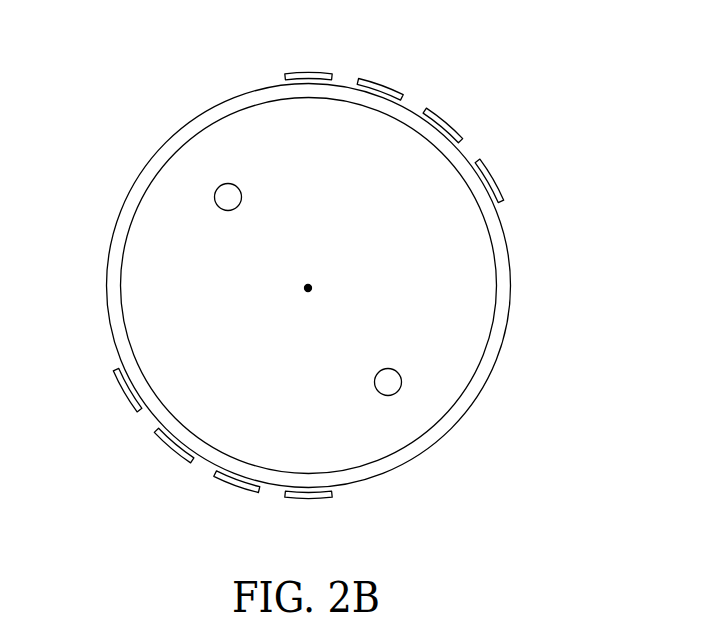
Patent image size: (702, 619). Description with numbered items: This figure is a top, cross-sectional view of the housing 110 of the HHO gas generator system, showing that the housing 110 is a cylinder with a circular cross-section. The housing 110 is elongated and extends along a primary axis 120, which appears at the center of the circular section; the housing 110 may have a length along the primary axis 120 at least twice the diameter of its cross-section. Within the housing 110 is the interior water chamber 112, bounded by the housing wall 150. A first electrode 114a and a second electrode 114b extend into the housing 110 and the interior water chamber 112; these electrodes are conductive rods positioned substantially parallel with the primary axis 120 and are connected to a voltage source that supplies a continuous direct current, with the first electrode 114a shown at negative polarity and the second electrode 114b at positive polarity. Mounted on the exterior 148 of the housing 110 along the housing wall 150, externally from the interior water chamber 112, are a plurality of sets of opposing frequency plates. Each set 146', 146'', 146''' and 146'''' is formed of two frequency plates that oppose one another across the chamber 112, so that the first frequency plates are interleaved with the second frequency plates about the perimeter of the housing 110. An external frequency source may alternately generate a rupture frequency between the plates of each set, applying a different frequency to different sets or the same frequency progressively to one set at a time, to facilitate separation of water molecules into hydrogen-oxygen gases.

The housing 110 is at (163, 118).
The interior water chamber 112 is at (488, 282).
The first electrode 114a is at (375, 383).
The second electrode 114b is at (242, 195).
The primary axis 120 is at (302, 290).
The exterior of housing 148 is at (236, 97).
The housing wall 150 is at (117, 219).
The first set of opposing frequency plates 146' is at (303, 288).
The second set of opposing frequency plates 146'' is at (311, 288).
The third set of opposing frequency plates 146''' is at (311, 288).
The fourth set of opposing frequency plates 146'''' is at (318, 295).